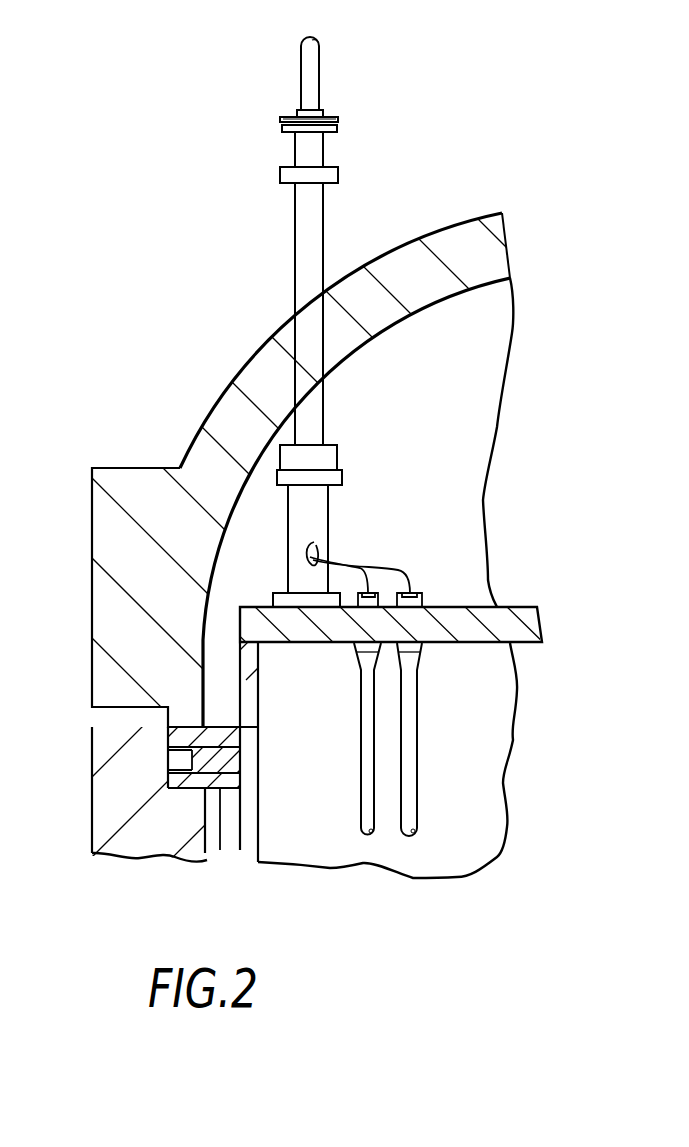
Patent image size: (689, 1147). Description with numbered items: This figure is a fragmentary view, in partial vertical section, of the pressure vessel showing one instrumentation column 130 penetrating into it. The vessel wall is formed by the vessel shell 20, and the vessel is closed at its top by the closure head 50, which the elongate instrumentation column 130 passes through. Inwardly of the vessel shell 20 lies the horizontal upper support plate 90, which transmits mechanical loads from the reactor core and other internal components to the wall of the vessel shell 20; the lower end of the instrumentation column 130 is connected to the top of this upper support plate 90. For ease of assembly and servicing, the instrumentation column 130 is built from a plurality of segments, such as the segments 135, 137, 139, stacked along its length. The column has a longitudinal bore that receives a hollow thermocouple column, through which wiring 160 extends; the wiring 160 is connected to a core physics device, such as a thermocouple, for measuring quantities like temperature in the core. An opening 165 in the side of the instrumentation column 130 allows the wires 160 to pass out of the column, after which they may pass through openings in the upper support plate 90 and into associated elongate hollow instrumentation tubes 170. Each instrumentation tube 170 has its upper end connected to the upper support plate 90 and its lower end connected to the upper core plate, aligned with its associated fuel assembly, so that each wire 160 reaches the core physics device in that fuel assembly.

The vessel shell 20 is at (107, 801).
The closure head 50 is at (220, 407).
The upper support plate 90 is at (517, 615).
The instrumentation column 130 is at (135, 260).
The segment 135 is at (325, 72).
The segment 137 is at (327, 150).
The segment 139 is at (288, 175).
The wiring 160 is at (397, 570).
The opening 165 is at (310, 547).
The instrumentation tube 170 is at (363, 803).